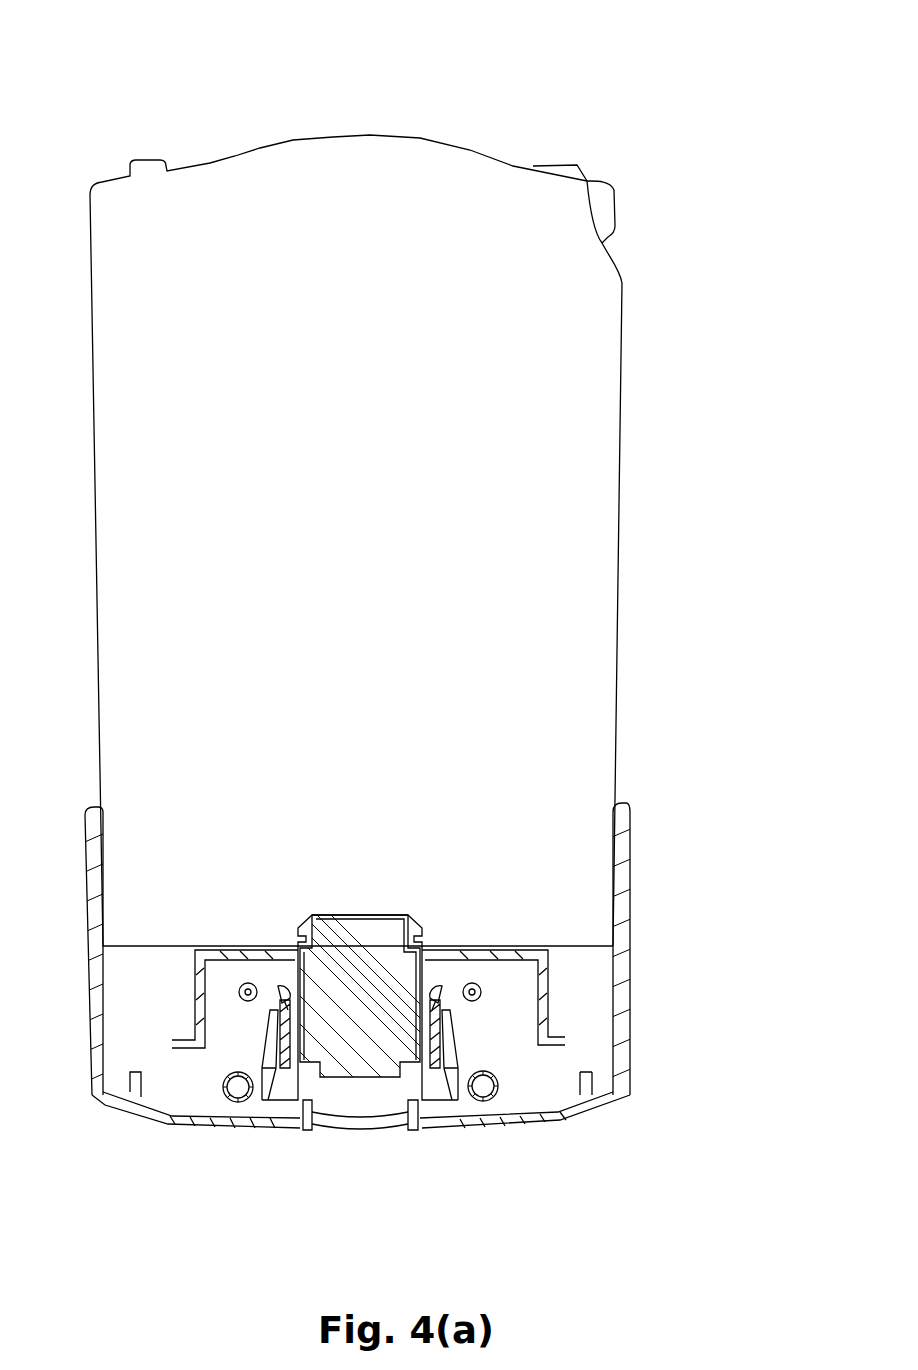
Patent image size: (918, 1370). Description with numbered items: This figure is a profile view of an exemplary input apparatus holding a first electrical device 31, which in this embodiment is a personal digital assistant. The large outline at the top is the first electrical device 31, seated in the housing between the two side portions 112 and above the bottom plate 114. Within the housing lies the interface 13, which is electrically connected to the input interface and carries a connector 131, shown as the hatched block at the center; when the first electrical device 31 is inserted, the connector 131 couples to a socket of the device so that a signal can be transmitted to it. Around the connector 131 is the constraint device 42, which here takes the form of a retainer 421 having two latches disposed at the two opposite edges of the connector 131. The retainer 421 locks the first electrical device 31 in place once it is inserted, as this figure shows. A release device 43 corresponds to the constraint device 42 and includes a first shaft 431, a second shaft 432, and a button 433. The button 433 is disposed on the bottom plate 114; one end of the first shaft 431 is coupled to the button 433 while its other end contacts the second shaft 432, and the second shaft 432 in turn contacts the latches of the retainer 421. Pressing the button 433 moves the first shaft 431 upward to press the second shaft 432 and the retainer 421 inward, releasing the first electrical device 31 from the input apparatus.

The first electrical device 31 is at (410, 168).
The side portion 112 is at (627, 892).
The bottom plate 114 is at (177, 1127).
The interface 13 is at (330, 912).
The connector 131 is at (356, 918).
The constraint device 42 is at (432, 930).
The retainer 421 is at (411, 912).
The release device 43 is at (270, 1065).
The first shaft 431 is at (237, 1100).
The second shaft 432 is at (285, 990).
The button 433 is at (364, 1125).